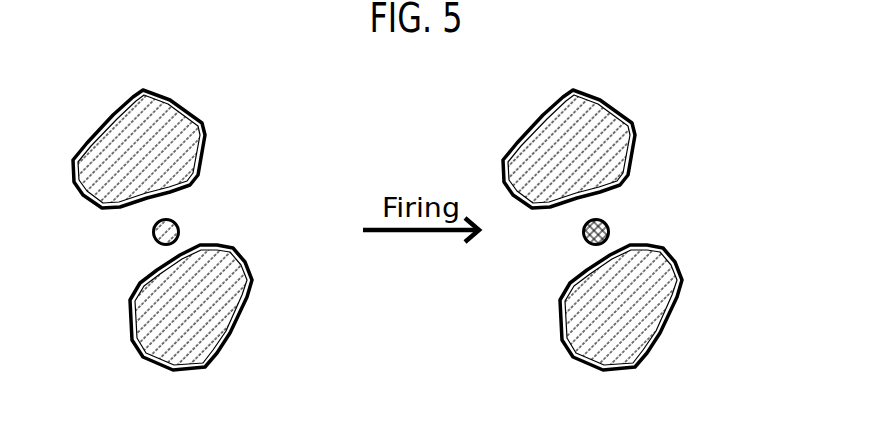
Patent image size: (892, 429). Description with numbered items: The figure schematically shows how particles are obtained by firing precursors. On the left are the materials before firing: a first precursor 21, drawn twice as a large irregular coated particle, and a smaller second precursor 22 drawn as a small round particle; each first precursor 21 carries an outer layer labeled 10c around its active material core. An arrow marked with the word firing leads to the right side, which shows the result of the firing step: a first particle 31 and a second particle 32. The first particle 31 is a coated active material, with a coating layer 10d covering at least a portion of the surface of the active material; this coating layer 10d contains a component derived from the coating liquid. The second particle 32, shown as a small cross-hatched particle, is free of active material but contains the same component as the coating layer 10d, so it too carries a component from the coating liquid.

The coating layer (before firing) 10c is at (205, 142).
The coating layer 10d is at (635, 142).
The first precursor 21 is at (221, 230).
The second precursor 22 is at (180, 230).
The first particle 31 is at (651, 230).
The second particle 32 is at (610, 230).